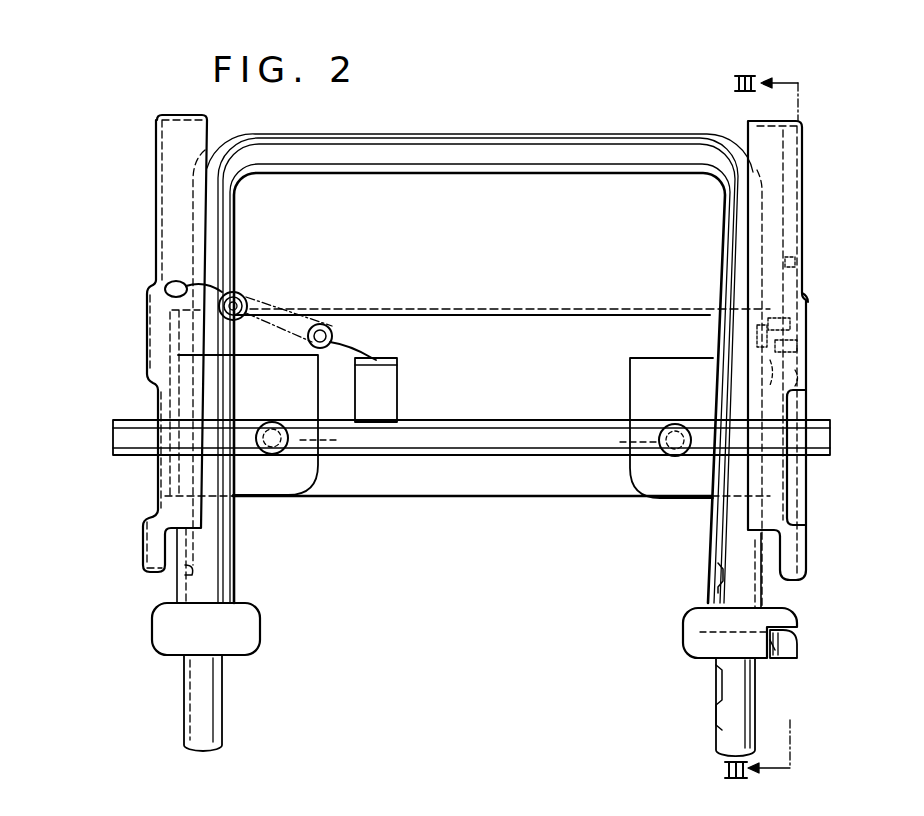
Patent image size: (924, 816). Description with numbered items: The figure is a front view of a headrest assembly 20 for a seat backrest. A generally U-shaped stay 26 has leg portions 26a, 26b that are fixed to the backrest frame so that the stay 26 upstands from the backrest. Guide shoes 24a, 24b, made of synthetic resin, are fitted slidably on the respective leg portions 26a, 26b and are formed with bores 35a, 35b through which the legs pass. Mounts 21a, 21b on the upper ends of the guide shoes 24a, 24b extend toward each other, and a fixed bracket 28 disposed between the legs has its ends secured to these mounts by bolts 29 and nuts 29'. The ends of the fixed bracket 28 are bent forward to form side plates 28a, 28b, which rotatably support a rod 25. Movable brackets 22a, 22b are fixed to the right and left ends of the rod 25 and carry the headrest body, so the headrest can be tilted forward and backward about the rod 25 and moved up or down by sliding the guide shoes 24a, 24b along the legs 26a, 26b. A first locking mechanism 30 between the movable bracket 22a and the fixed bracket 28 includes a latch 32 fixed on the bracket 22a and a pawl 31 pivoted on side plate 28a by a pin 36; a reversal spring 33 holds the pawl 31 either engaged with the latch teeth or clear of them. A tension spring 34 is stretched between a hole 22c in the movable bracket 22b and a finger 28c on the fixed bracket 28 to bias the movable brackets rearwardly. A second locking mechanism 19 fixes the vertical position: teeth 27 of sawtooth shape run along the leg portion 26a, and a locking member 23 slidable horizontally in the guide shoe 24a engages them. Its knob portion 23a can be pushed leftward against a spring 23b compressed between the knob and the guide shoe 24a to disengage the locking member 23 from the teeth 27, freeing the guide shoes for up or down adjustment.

The second locking mechanism 19 is at (814, 629).
The headrest assembly 20 is at (641, 128).
The mount 21a is at (628, 488).
The mount 21b is at (303, 488).
The movable bracket 22a is at (786, 170).
The movable bracket 22b is at (170, 143).
The hole 22c is at (165, 280).
The locking member 23 is at (700, 632).
The knob portion 23a is at (790, 648).
The spring 23b is at (772, 652).
The guide shoe 24a is at (805, 606).
The guide shoe 24b is at (264, 602).
The rod 25 is at (470, 428).
The stay 26 is at (508, 147).
The leg portion 26a is at (737, 725).
The leg portion 26b is at (213, 697).
The teeth 27 is at (718, 665).
The fixed bracket 28 is at (495, 487).
The side plate 28a is at (793, 377).
The side plate 28b is at (160, 365).
The finger 28c is at (395, 358).
The bolt 29 is at (473, 409).
The nut 29' is at (480, 442).
The first locking mechanism 30 is at (812, 292).
The pawl 31 is at (790, 322).
The latch 32 is at (800, 262).
The reversal spring 33 is at (745, 335).
The tension spring 34 is at (343, 328).
The bore 35a is at (706, 538).
The bore 35b is at (182, 578).
The pin 36 is at (803, 347).